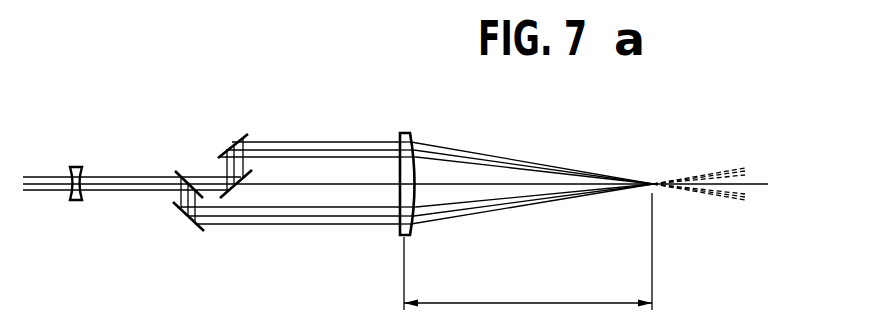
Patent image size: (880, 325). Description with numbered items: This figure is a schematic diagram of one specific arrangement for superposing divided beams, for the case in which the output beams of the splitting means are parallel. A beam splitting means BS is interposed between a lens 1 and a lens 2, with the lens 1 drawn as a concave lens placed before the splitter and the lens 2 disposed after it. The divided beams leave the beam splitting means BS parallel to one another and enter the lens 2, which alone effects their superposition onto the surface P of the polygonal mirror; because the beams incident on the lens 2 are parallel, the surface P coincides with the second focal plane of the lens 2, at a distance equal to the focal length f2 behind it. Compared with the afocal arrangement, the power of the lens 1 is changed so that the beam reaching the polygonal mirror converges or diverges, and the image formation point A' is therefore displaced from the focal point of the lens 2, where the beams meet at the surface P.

The lens 1 is at (76, 167).
The lens 2 is at (400, 133).
The beam splitting means BS is at (229, 160).
The surface of the polygonal mirror P is at (535, 183).
The image formation point A' is at (709, 189).
The focal length of lens 2 f2 is at (528, 251).